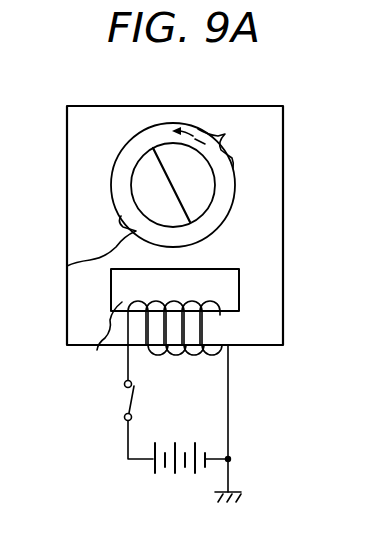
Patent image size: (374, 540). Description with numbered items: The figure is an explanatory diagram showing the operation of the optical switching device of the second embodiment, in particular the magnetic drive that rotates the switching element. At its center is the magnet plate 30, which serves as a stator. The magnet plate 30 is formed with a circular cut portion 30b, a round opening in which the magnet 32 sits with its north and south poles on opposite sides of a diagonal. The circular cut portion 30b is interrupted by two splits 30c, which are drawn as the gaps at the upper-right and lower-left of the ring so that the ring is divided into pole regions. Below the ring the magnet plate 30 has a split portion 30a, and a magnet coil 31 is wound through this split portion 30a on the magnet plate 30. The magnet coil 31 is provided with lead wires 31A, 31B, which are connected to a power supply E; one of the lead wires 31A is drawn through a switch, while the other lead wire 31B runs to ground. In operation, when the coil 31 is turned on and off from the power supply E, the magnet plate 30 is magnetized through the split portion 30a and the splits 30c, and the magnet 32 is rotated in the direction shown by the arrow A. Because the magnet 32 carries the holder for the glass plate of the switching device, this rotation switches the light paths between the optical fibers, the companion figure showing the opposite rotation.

The magnet plate 30 is at (265, 232).
The split portion 30a is at (100, 348).
The circular cut portion 30b is at (142, 143).
The splits 30c is at (221, 132).
The magnet coil 31 is at (199, 328).
The lead wire 31A is at (126, 364).
The lead wire 31B is at (228, 425).
The magnet 32 is at (135, 175).
The arrow A is at (208, 134).
The power supply E is at (166, 473).